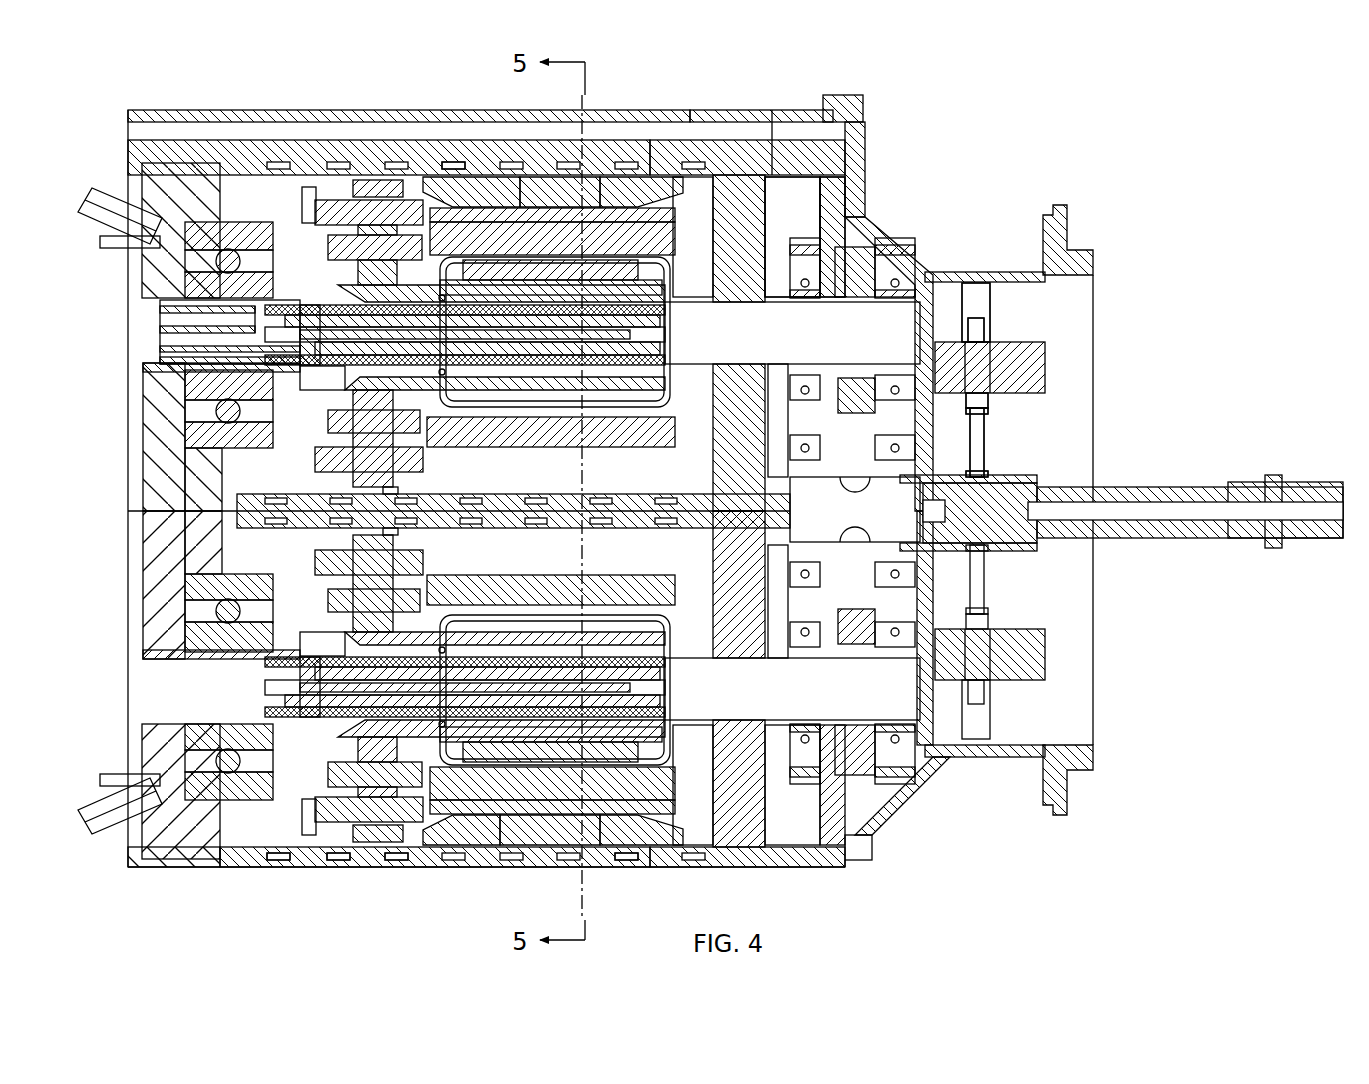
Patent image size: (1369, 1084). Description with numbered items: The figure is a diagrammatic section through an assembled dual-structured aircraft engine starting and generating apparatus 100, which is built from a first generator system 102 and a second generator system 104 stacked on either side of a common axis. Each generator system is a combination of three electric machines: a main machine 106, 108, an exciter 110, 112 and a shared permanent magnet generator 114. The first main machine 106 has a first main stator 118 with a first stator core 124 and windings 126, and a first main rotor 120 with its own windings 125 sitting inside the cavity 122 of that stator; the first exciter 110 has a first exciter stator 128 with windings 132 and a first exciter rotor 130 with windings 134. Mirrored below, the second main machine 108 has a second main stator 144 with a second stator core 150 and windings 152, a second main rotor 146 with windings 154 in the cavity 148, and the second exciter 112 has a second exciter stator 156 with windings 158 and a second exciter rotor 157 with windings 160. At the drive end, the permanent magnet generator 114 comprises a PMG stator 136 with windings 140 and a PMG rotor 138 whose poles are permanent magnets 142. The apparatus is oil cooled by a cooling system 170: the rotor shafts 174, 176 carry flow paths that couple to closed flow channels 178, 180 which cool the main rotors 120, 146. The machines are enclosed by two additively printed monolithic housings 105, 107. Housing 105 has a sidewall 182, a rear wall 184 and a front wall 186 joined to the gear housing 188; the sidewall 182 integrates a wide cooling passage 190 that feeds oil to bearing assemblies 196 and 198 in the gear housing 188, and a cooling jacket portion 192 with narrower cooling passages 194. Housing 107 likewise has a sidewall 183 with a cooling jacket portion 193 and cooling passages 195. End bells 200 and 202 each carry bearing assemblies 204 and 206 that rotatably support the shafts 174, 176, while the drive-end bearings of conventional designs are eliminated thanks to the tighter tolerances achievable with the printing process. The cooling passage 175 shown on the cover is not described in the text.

The aircraft engine starting and generating apparatus 100 is at (1050, 128).
The first generator system 102 is at (705, 222).
The second generator system 104 is at (296, 845).
The housing 105 is at (160, 100).
The first main machine 106 is at (633, 178).
The housing 107 is at (170, 867).
The second main machine 108 is at (508, 845).
The first exciter 110 is at (365, 178).
The second exciter 112 is at (370, 855).
The permanent magnet generator 114 is at (1062, 350).
The first main stator 118 is at (560, 195).
The first main rotor 120 is at (585, 268).
The cavity 122 is at (678, 283).
The first stator core 124 is at (500, 180).
The windings 125 is at (476, 248).
The windings 126 is at (600, 195).
The first exciter stator 128 is at (340, 180).
The first exciter rotor 130 is at (360, 268).
The windings 132 is at (320, 210).
The windings 134 is at (335, 248).
The PMG stator 136 is at (975, 340).
The PMG rotor 138 is at (982, 445).
The windings 140 is at (1040, 372).
The permanent magnets 142 is at (985, 408).
The second main stator 144 is at (535, 822).
The second main rotor 146 is at (595, 765).
The cavity 148 is at (707, 800).
The second stator core 150 is at (612, 850).
The windings 152 is at (460, 822).
The windings 154 is at (478, 797).
The second exciter stator 156 is at (373, 835).
The second exciter rotor 157 is at (360, 755).
The windings 158 is at (323, 815).
The windings 160 is at (335, 768).
The cooling system 170 is at (733, 152).
The rotor shaft 174 is at (765, 302).
The housing cover right 175 is at (700, 110).
The rotor shaft 176 is at (765, 720).
The closed flow channel 178 is at (500, 255).
The closed flow channel 180 is at (505, 415).
The sidewall 182 is at (130, 150).
The sidewall 183 is at (242, 857).
The rear wall 184 is at (145, 330).
The front wall 186 is at (718, 269).
The gear housing 188 is at (1083, 242).
The cooling passage 190 is at (280, 125).
The cooling jacket portion 192 is at (310, 152).
The cooling jacket portion 193 is at (430, 855).
The cooling passage 194 is at (450, 162).
The cooling passage 195 is at (715, 862).
The bearing assembly 196 is at (895, 243).
The bearing assembly 198 is at (898, 772).
The end bell 200 is at (165, 425).
The end bell 202 is at (175, 610).
The bearing assembly 204 is at (215, 285).
The bearing assembly 206 is at (210, 645).